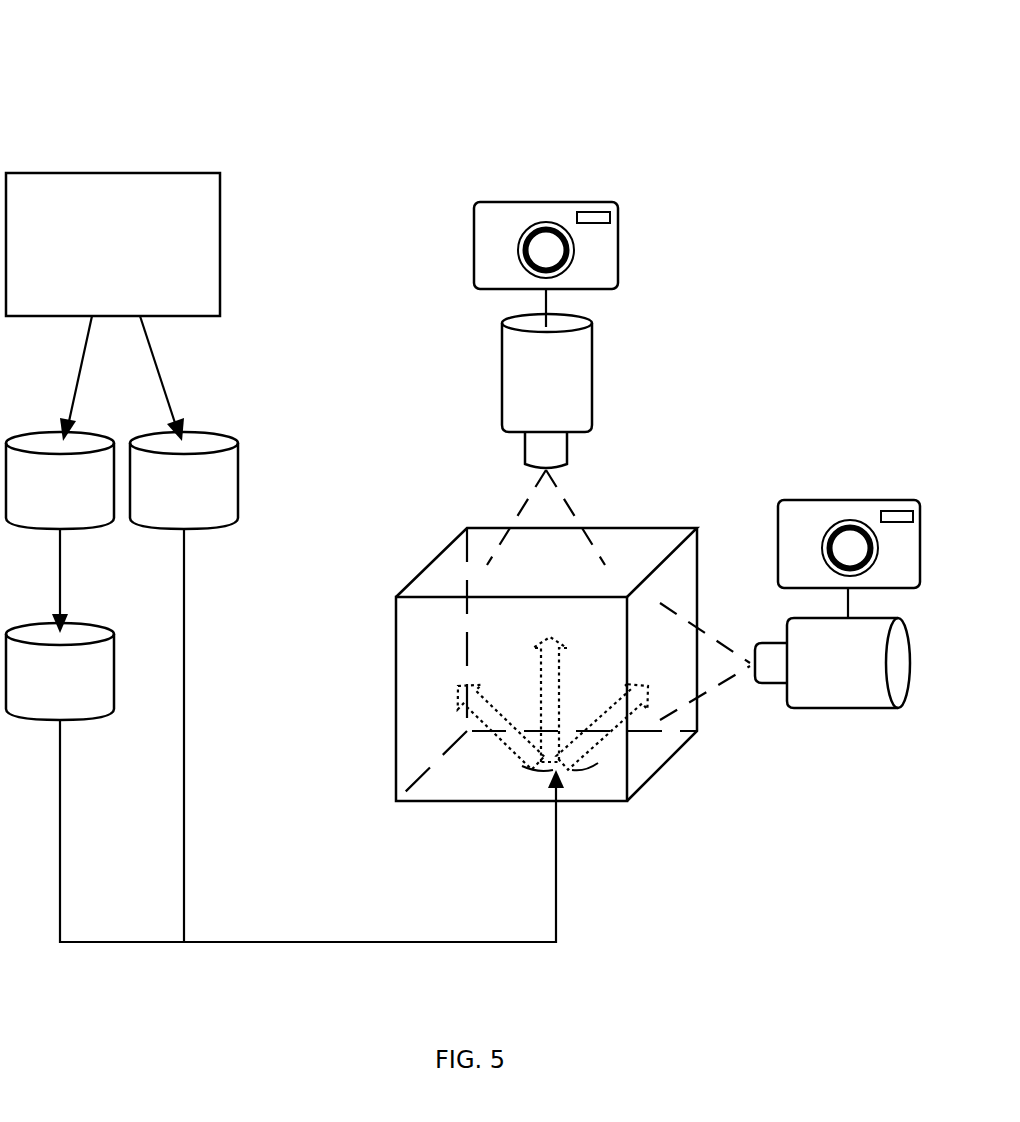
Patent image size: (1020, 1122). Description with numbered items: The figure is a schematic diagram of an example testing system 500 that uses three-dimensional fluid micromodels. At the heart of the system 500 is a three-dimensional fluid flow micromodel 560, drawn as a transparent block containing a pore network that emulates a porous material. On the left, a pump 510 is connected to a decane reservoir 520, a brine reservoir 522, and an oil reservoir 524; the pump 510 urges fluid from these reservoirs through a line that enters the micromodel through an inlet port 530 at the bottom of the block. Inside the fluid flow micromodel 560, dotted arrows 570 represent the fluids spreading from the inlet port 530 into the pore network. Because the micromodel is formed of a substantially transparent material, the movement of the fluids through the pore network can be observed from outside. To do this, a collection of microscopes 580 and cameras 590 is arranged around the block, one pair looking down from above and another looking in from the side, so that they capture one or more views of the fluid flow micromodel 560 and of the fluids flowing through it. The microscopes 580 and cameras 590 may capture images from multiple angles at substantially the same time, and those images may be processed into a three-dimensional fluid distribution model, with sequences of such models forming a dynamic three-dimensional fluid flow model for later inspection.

The testing system 500 is at (70, 60).
The pump 510 is at (113, 244).
The decane reservoir 520 is at (60, 480).
The brine reservoir 522 is at (60, 671).
The oil reservoir 524 is at (184, 480).
The inlet port 530 is at (580, 768).
The 3D fluid flow micromodel 560 is at (430, 563).
The arrows 570 is at (446, 712).
The microscopes 580 is at (706, 511).
The cameras 590 is at (618, 238).